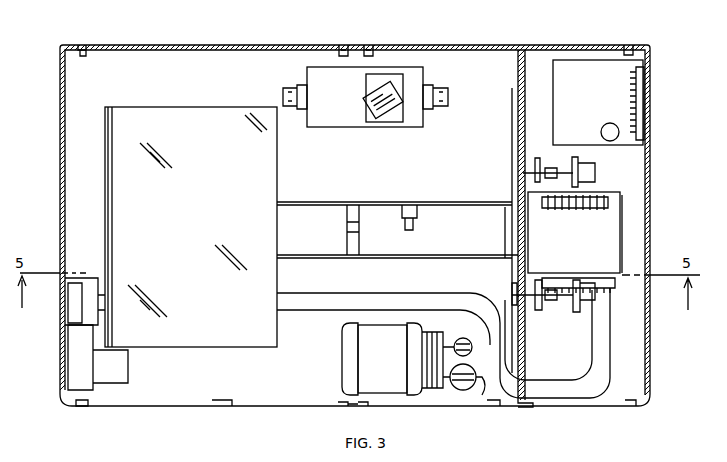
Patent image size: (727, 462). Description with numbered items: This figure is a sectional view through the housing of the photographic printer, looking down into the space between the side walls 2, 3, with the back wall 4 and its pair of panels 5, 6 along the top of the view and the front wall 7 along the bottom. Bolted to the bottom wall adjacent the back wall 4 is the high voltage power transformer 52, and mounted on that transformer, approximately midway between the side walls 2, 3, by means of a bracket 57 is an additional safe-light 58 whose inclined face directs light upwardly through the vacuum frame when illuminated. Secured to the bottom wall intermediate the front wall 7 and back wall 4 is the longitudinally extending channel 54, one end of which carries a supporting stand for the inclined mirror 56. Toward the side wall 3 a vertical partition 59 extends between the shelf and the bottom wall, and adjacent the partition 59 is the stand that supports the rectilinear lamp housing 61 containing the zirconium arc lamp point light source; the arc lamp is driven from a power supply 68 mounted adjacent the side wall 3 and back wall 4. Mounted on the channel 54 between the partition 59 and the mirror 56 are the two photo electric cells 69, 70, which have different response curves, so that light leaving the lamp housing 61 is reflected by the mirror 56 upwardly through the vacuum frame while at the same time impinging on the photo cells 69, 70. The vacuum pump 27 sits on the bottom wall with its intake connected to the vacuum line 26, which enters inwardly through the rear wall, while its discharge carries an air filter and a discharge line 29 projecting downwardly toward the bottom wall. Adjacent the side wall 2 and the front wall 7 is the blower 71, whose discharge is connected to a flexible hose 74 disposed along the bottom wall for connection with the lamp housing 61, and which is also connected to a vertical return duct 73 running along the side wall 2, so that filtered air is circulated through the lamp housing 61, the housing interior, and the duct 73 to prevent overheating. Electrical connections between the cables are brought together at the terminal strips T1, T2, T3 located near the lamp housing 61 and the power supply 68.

The side wall 2 is at (59, 146).
The side wall 3 is at (652, 133).
The back wall 4 is at (84, 45).
The panel 5 is at (160, 48).
The panel 6 is at (548, 48).
The front wall 7 is at (80, 408).
The vacuum line 26 is at (485, 318).
The vacuum pump 27 is at (345, 352).
The discharge line 29 is at (483, 388).
The high voltage power transformer 52 is at (400, 67).
The channel 54 is at (383, 202).
The inclined mirror 56 is at (183, 142).
The bracket 57 is at (408, 85).
The safe-light 58 is at (378, 78).
The vertical partition 59 is at (519, 75).
The lamp housing 61 is at (622, 235).
The power supply 68 is at (582, 62).
The photo electric cell 69 is at (412, 222).
The photo electric cell 70 is at (353, 225).
The blower 71 is at (113, 385).
The vertical return duct 73 is at (88, 282).
The flexible hose 74 is at (325, 293).
The terminal strip T1 is at (642, 90).
The terminal strip T2 is at (608, 203).
The terminal strip T3 is at (616, 293).